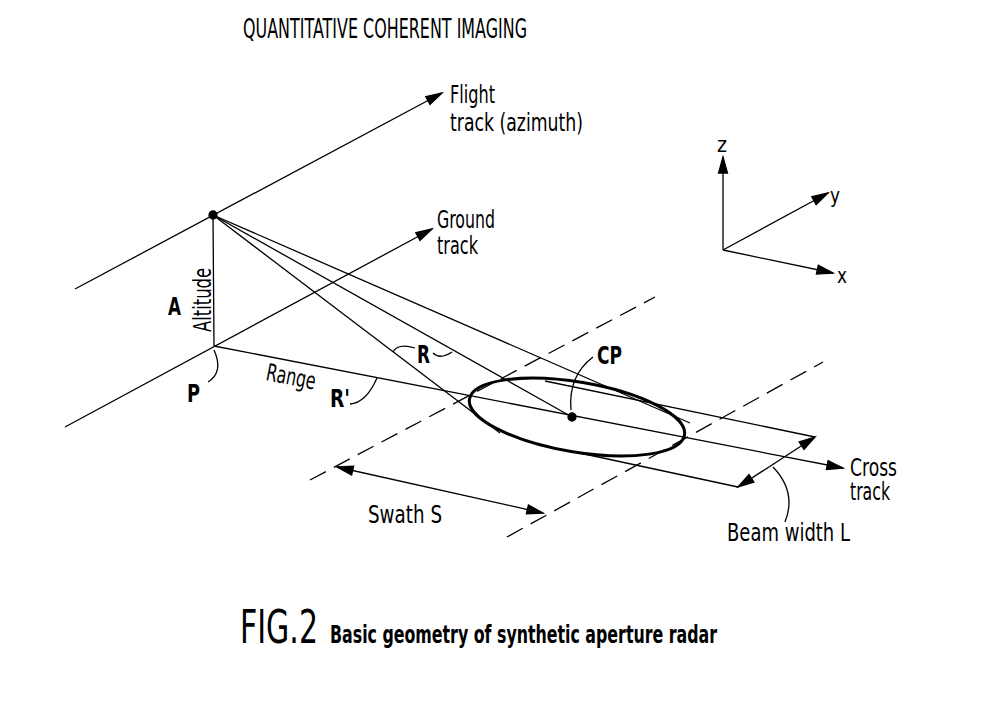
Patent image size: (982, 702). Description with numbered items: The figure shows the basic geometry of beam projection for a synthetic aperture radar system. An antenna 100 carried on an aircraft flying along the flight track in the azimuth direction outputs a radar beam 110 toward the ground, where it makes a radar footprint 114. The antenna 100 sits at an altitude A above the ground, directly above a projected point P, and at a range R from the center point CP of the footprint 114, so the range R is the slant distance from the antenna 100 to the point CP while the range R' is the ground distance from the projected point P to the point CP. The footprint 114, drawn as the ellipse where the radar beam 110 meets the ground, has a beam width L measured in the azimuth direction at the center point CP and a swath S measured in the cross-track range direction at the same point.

The antenna 100 is at (213, 211).
The radar beam 110 is at (440, 314).
The radar footprint 114 is at (622, 390).